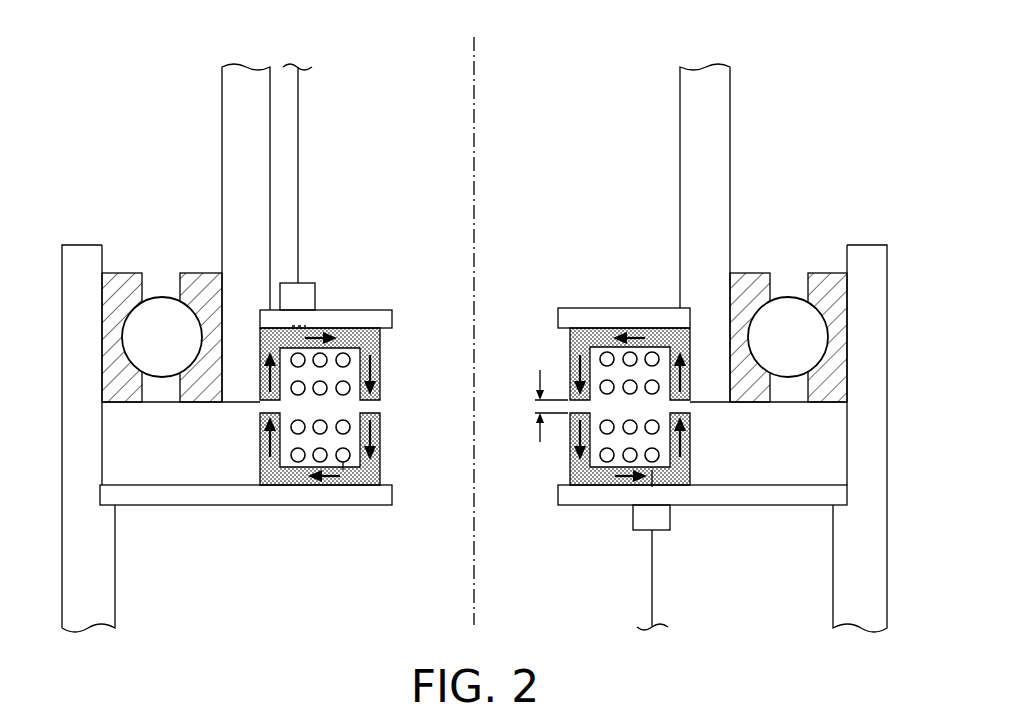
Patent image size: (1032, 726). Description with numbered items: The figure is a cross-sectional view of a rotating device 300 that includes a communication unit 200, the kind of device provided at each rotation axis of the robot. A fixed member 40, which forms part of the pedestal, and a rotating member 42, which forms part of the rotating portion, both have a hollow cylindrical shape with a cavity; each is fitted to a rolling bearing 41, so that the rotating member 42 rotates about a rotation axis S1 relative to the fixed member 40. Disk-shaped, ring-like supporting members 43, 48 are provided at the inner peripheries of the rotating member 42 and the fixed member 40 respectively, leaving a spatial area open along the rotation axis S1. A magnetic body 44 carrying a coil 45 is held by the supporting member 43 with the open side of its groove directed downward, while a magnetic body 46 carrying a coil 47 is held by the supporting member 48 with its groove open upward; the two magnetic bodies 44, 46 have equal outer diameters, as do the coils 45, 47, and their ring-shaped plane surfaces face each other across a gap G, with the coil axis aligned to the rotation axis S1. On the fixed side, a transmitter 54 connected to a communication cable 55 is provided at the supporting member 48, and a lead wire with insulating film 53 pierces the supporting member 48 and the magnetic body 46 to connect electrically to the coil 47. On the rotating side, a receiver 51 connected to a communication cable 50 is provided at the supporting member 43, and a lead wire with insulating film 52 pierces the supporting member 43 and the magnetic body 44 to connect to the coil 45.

The fixed member 40 is at (115, 565).
The bearing 41 is at (123, 273).
The rotating member 42 is at (222, 148).
The supporting member 43 is at (392, 318).
The magnetic body 44 is at (380, 345).
The coil 45 is at (345, 393).
The magnetic body 46 is at (380, 460).
The coil 47 is at (343, 462).
The supporting member 48 is at (392, 492).
The communication cable 50 is at (298, 143).
The receiver 51 is at (305, 292).
The lead wire with insulating film 52 is at (300, 325).
The lead wire with insulating film 53 is at (650, 488).
The transmitter 54 is at (670, 518).
The communication cable 55 is at (652, 575).
The communication unit 200 is at (603, 279).
The rotating device 300 is at (523, 56).
The rotation axis S1 is at (474, 113).
The gap G is at (538, 406).